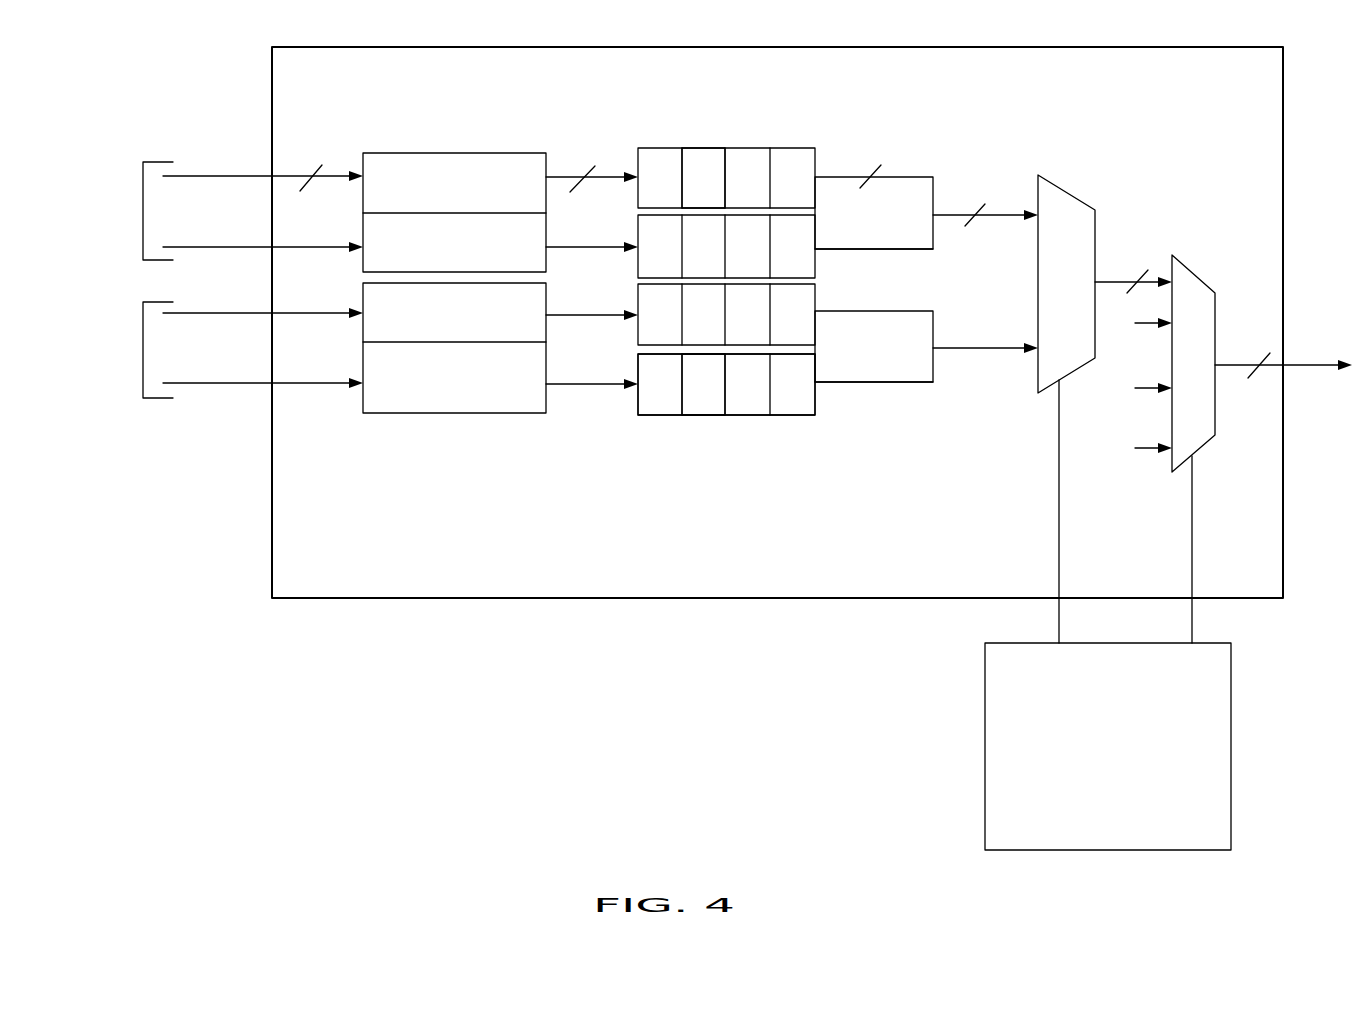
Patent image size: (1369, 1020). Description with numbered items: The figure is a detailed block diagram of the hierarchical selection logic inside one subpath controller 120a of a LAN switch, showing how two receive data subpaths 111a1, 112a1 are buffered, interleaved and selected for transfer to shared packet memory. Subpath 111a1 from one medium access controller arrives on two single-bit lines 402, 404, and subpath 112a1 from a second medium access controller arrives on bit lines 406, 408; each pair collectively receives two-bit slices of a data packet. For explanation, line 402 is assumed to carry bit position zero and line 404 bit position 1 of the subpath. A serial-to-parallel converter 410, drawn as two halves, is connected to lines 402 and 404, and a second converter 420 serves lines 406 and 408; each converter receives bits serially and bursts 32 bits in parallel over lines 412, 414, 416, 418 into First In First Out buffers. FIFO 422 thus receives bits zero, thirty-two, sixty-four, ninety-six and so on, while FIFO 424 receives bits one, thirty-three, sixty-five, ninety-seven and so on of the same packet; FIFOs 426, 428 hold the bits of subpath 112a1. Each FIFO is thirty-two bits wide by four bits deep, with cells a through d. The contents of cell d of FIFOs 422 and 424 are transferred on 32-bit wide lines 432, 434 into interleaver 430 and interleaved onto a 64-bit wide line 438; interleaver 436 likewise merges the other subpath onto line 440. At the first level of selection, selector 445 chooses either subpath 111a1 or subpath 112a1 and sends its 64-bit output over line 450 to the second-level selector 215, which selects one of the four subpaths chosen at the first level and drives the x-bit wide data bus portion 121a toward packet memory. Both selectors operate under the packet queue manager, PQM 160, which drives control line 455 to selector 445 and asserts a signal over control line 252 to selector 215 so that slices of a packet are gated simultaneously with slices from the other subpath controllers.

The subpath controller 120a is at (389, 568).
The receive data subpath 111a1 is at (143, 206).
The receive data subpath 112a1 is at (143, 336).
The single-bit line 402 is at (223, 172).
The single-bit line 404 is at (223, 242).
The bit line 406 is at (233, 308).
The bit line 408 is at (233, 378).
The bit position 1 is at (311, 167).
The serial-to-parallel converter 410 is at (415, 152).
The serial-to-parallel converter 420 is at (451, 414).
The parallel output line 412 is at (614, 170).
The parallel output line 414 is at (566, 245).
The parallel output line 416 is at (558, 314).
The parallel output line 418 is at (565, 382).
The FIFO buffer 422 is at (727, 147).
The FIFO buffer 424 is at (697, 215).
The FIFO buffer 426 is at (707, 345).
The FIFO buffer 428 is at (751, 415).
The interleaver 430 is at (925, 177).
The 32-bit wide line 432 is at (855, 249).
The 32-bit wide line 434 is at (875, 311).
The interleaver 436 is at (882, 383).
The bit width 32 is at (727, 162).
The bit width 64 is at (1110, 279).
The 64-bit wide line 438 is at (995, 218).
The interleaved line 440 is at (983, 350).
The selector 445 is at (1048, 283).
The selector output line 450 is at (1113, 282).
The selector 215 is at (1173, 368).
The data bus portion 121a is at (1220, 364).
The control line 455 is at (1059, 508).
The control line 252 is at (1196, 525).
The PQM 160 is at (1090, 778).